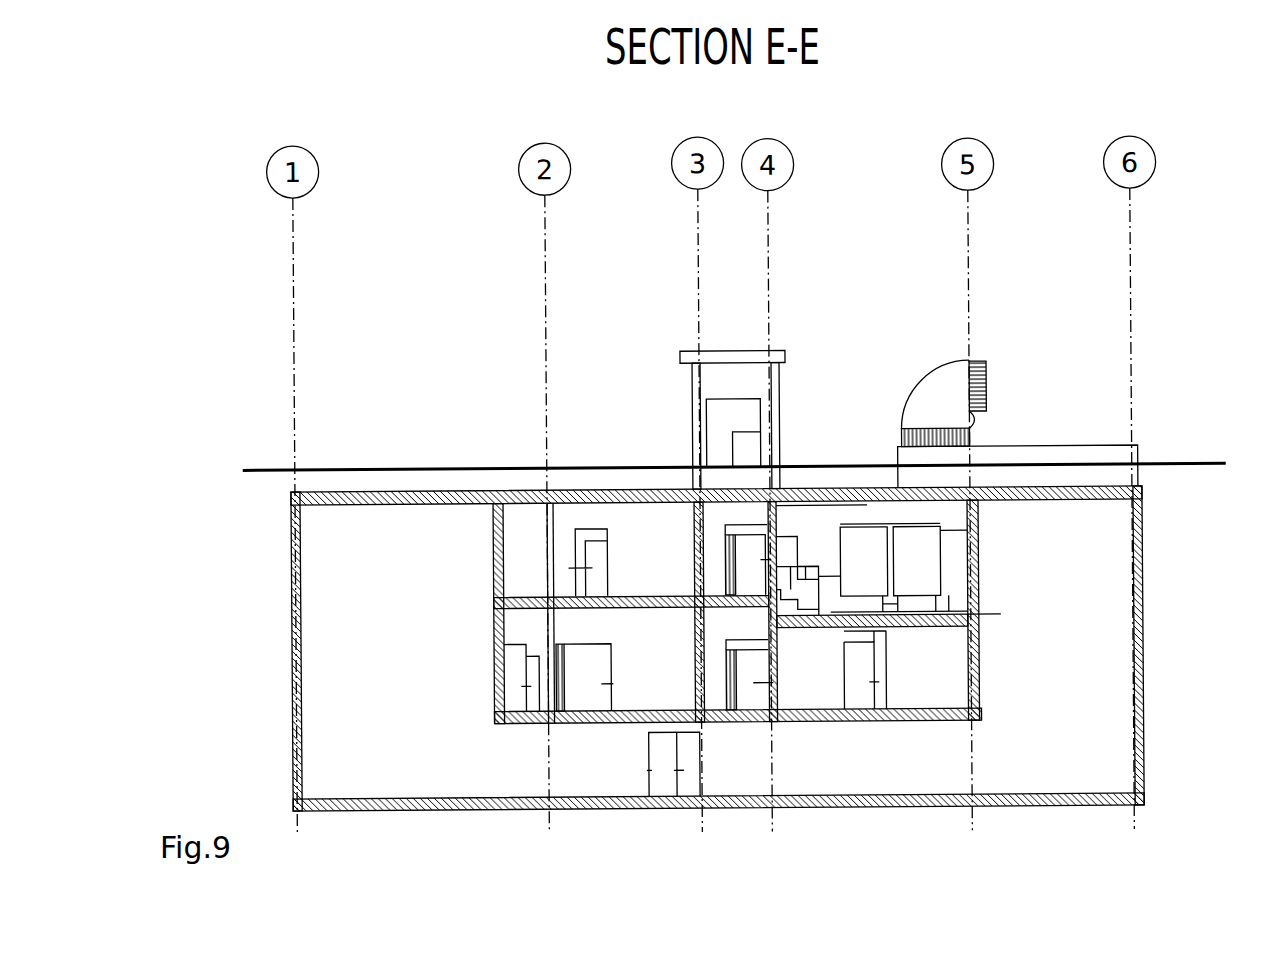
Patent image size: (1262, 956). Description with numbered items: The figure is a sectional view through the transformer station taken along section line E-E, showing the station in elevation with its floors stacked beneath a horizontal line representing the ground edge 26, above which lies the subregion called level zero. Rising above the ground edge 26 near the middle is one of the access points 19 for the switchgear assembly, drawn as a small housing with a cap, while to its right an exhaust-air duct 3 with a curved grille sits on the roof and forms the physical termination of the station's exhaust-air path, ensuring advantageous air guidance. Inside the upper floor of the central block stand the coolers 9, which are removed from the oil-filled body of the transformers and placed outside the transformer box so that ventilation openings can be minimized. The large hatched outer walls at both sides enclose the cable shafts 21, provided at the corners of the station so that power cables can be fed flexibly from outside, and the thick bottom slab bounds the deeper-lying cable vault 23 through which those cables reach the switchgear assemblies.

The exhaust-air duct 3 is at (988, 372).
The cooler 9 is at (913, 563).
The access point 19 is at (751, 438).
The cable shaft 21 is at (323, 588).
The cable vault 23 is at (345, 752).
The ground edge 26 is at (1196, 458).